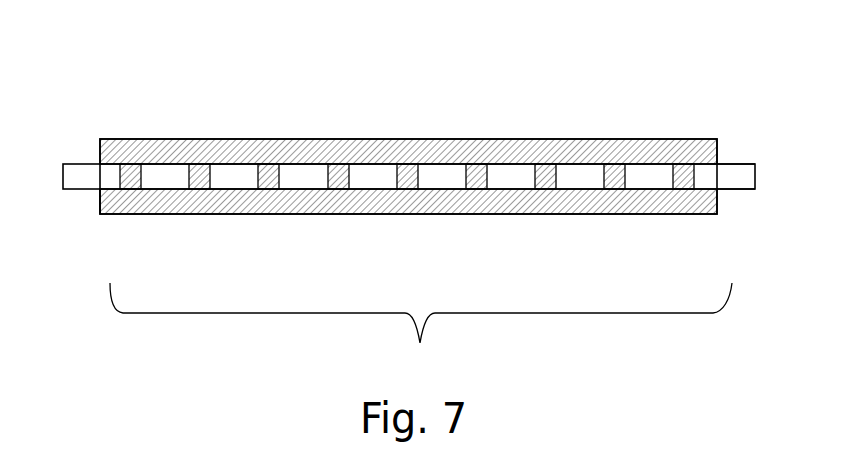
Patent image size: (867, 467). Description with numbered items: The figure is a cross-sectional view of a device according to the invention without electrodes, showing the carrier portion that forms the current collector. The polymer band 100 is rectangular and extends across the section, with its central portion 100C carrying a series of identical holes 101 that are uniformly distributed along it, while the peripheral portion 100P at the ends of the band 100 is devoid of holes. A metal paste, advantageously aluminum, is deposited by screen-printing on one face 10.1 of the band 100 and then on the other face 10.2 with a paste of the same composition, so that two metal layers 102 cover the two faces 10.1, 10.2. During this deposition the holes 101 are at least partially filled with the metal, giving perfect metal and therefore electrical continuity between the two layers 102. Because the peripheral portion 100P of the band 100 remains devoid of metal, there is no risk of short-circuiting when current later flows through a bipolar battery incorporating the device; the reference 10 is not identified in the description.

The strip / profile 10 is at (55, 163).
The face of the band 10.1 is at (733, 163).
The other face of the band 10.2 is at (737, 193).
The polymer band 100 is at (237, 172).
The peripheral portion 100P is at (82, 220).
The central portion 100C is at (421, 330).
The holes 101 is at (270, 170).
The metal layers 102 is at (430, 139).